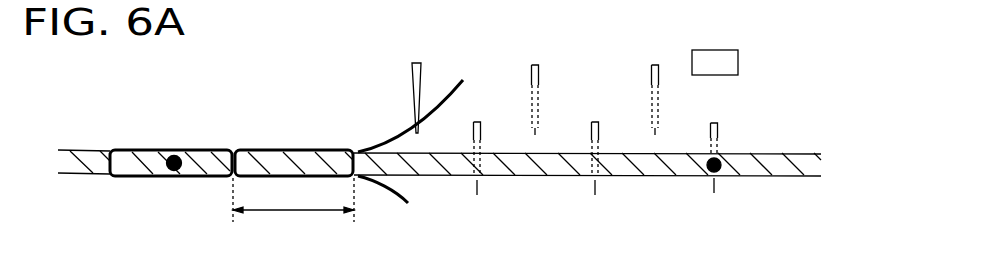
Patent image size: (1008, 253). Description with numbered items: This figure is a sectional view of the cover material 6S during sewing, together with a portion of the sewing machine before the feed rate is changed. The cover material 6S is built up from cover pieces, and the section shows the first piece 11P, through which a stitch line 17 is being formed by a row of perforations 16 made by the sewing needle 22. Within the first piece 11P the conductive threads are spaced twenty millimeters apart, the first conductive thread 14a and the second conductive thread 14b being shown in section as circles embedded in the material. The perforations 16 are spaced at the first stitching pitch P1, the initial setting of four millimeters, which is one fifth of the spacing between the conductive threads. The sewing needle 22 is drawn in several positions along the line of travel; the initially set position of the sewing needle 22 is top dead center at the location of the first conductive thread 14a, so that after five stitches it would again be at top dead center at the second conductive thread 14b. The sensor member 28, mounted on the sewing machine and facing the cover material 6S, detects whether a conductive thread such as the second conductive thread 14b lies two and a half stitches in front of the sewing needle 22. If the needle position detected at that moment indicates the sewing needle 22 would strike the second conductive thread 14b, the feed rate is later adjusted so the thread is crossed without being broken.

The cover material 6S is at (439, 123).
The first piece 11P is at (85, 158).
The perforations 16 is at (231, 123).
The stitch line 17 is at (178, 150).
The first conductive thread 14a is at (168, 173).
The second conductive thread 14b is at (722, 172).
The sewing needle 22 is at (413, 86).
The sensor member 28 is at (725, 59).
The first stitching pitch P1 is at (293, 207).